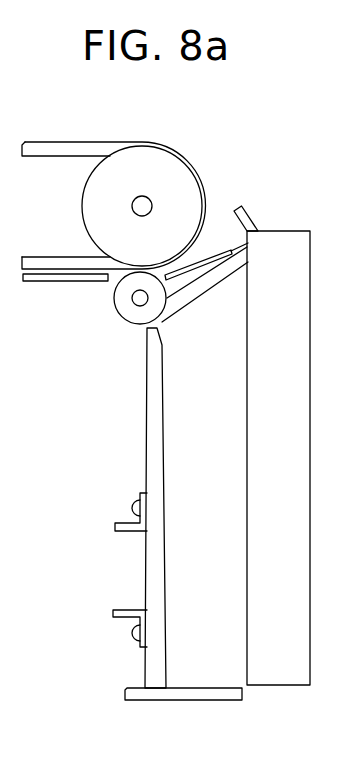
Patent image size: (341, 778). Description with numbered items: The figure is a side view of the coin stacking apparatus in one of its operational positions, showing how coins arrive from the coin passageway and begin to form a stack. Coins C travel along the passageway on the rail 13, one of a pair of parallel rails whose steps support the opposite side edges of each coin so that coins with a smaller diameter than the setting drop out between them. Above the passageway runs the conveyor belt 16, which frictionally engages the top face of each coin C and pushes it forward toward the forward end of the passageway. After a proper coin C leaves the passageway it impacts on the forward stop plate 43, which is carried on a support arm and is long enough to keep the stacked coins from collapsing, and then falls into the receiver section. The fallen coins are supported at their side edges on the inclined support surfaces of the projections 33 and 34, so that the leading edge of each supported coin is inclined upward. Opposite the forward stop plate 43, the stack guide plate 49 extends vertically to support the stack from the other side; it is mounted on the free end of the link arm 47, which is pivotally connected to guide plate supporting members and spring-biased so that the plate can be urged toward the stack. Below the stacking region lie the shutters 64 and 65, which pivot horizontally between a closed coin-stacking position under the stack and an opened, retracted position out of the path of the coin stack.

The conveyor belt 16 is at (58, 142).
The rail 13 is at (47, 282).
The coin C is at (227, 253).
The projection 33 is at (205, 302).
The projection 34 is at (201, 297).
The forward stop plate 43 is at (245, 418).
The stack guide plate 49 is at (148, 458).
The link arm 47 is at (122, 535).
The shutter 64 is at (201, 714).
The shutter 65 is at (178, 692).